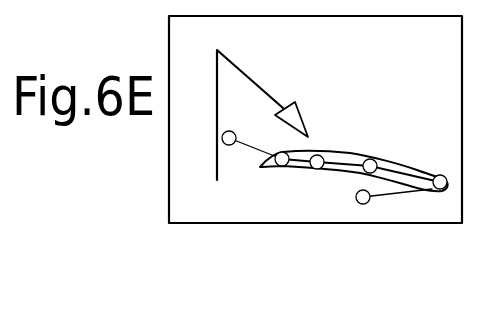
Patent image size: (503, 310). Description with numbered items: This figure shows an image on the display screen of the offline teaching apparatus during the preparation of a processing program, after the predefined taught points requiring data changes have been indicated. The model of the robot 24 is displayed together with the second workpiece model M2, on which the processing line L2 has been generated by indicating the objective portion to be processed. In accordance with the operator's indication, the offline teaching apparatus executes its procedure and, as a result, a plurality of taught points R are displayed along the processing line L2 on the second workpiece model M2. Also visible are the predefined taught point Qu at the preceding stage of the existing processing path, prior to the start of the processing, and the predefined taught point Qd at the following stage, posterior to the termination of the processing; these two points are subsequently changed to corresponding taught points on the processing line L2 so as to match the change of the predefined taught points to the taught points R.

The robot 24 is at (250, 78).
The second workpiece model M2 is at (352, 152).
The processing line L2 is at (398, 167).
The taught points R is at (367, 173).
The predefined taught point at the preceding stage Qu is at (229, 145).
The predefined taught point at the following stage Qd is at (363, 204).